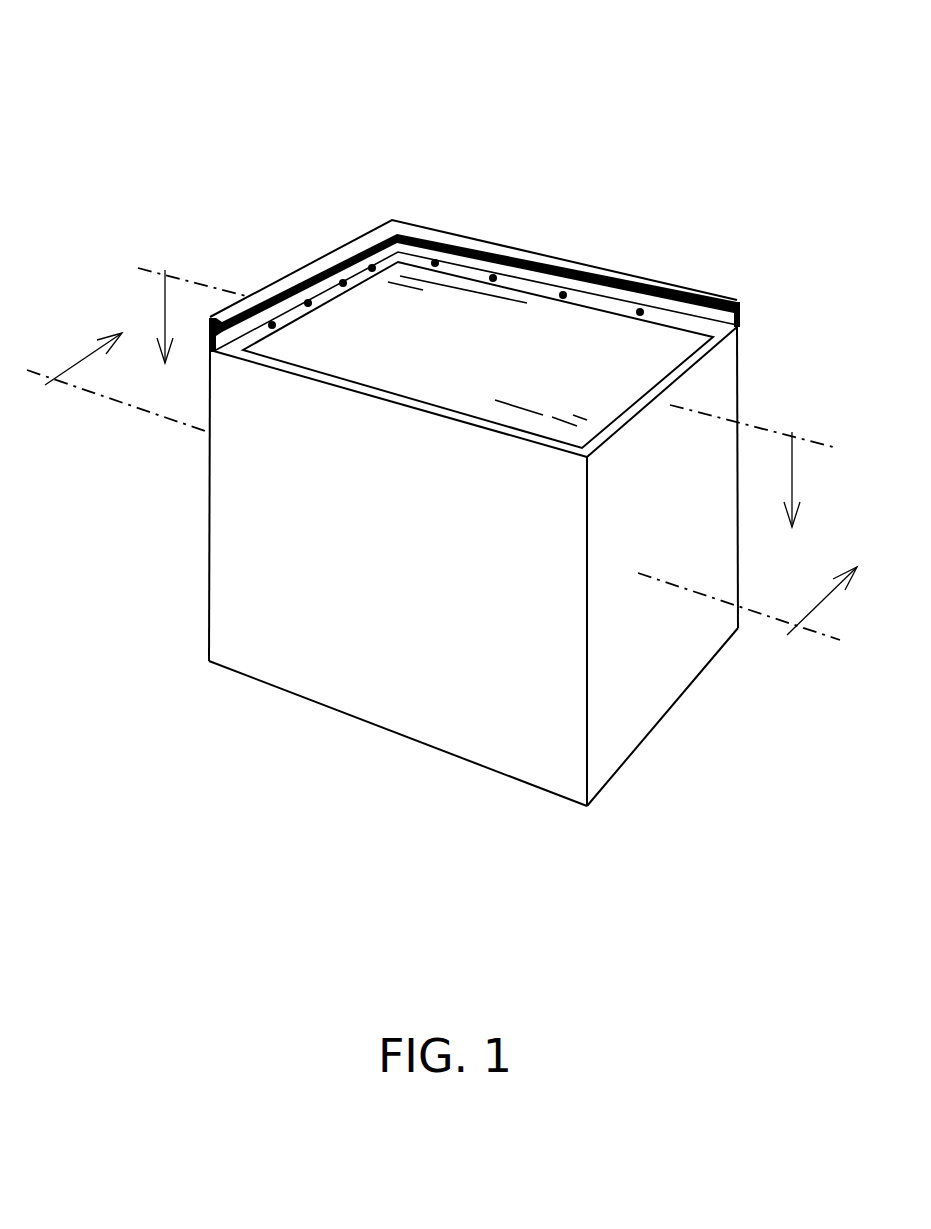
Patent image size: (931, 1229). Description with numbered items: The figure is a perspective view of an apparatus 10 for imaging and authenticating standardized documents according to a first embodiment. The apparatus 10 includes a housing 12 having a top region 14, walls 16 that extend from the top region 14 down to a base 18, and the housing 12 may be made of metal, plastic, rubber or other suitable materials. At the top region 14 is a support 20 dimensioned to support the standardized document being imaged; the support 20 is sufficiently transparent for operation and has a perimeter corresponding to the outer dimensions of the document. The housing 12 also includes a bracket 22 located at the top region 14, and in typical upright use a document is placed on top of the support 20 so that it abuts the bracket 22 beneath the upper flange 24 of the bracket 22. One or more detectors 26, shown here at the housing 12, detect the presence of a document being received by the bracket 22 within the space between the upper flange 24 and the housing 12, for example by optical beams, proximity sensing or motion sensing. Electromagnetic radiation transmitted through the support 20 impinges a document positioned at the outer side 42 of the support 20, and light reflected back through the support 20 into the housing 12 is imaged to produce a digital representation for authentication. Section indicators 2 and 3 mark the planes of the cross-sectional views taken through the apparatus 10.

The apparatus 10 is at (688, 101).
The housing 12 is at (727, 397).
The top region 14 is at (229, 208).
The walls 16 is at (223, 498).
The base 18 is at (358, 720).
The support 20 is at (577, 337).
The bracket 22 is at (738, 303).
The upper flange 24 is at (553, 262).
The detectors 26 is at (434, 258).
The outer side 42 is at (647, 347).
The section line 2- 2 is at (442, 486).
The section line 3- 3 is at (487, 397).